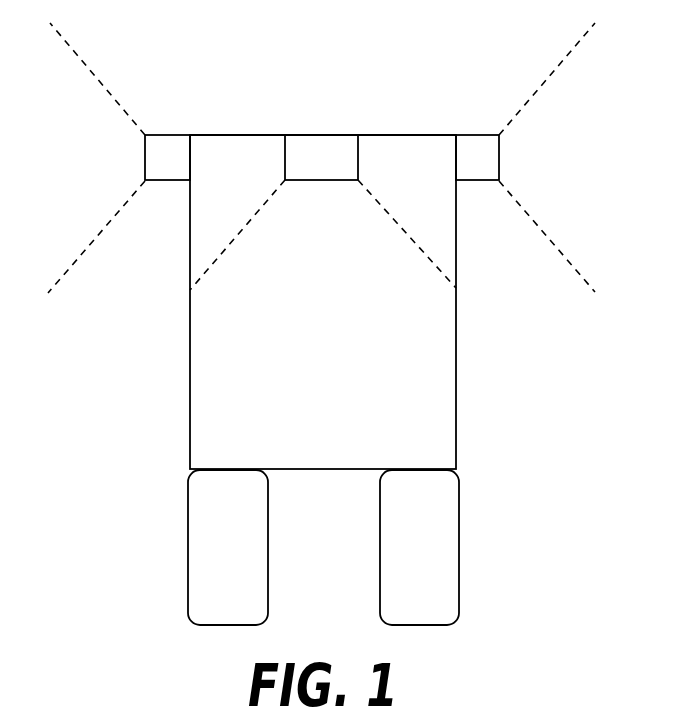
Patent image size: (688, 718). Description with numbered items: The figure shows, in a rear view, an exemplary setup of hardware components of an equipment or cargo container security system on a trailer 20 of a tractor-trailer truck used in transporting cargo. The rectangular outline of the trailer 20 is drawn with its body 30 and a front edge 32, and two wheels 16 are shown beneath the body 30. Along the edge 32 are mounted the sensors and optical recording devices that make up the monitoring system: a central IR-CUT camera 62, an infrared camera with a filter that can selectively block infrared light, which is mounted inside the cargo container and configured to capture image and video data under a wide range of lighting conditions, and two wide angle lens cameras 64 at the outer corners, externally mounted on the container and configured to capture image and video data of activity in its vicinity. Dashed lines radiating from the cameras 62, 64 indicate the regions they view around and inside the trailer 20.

The wheels 16 is at (207, 552).
The trailer 20 is at (320, 324).
The vehicle body 30 is at (422, 370).
The front end of vehicle 32 is at (370, 145).
The IR-CUT camera 62 is at (313, 145).
The wide angle lens camera 64 is at (145, 152).